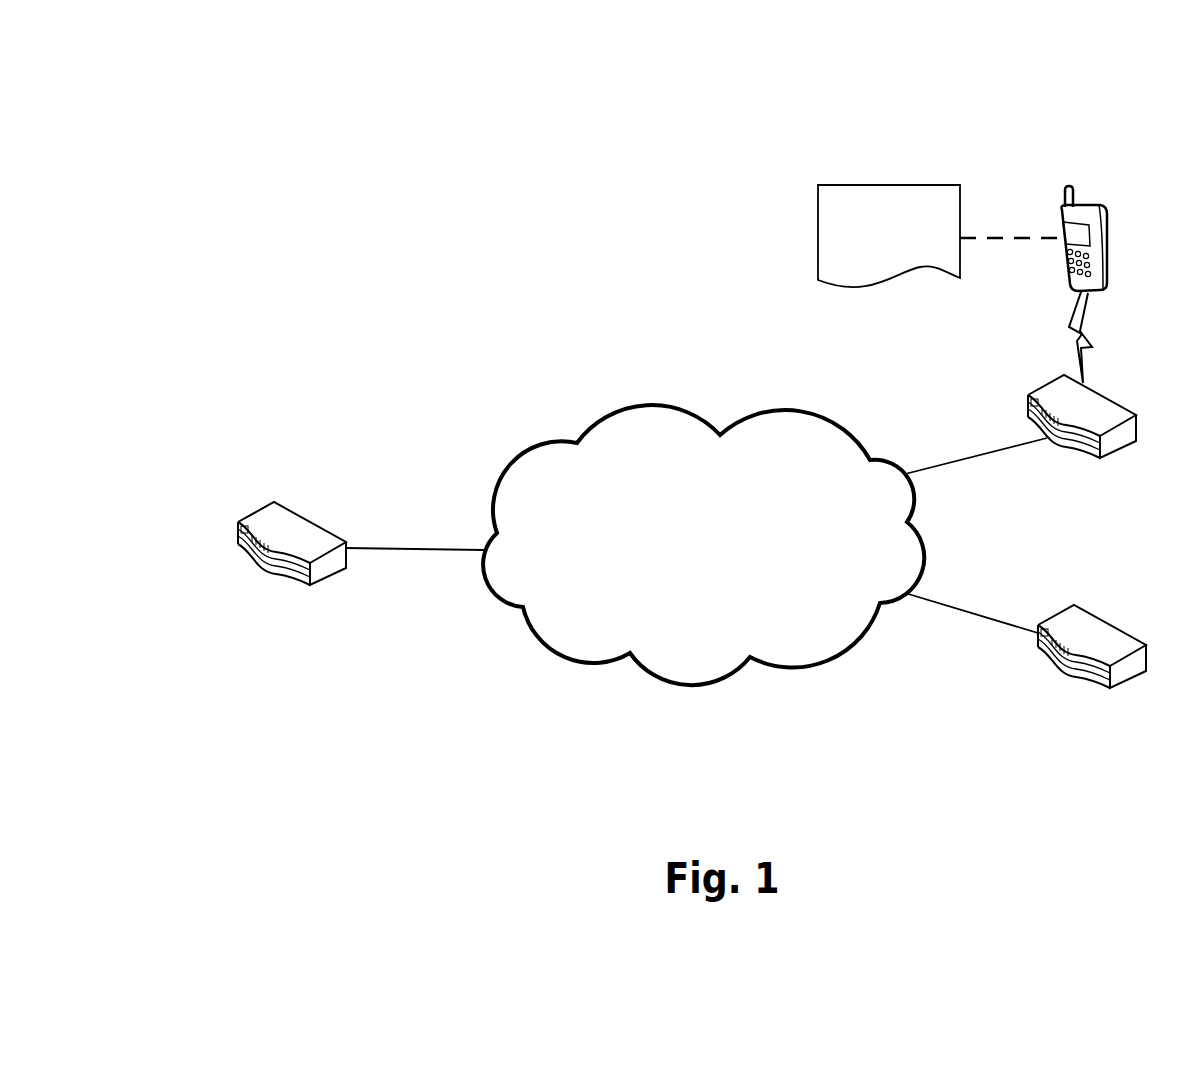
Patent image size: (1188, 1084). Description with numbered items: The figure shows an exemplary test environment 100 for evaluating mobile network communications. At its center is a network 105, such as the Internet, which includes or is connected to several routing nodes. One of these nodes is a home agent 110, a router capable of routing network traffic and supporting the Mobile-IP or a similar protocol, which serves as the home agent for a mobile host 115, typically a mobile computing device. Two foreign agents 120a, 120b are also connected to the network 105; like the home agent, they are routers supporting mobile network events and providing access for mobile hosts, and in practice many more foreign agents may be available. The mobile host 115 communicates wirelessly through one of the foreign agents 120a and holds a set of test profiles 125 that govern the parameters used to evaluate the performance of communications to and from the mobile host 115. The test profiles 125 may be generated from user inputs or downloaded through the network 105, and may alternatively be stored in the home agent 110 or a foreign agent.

The test environment 100 is at (379, 161).
The network 105 is at (696, 545).
The home agent 110 is at (292, 559).
The mobile host 115 is at (1115, 284).
The foreign agent 120a is at (1082, 433).
The foreign agent 120b is at (1092, 663).
The test profiles 125 is at (938, 236).